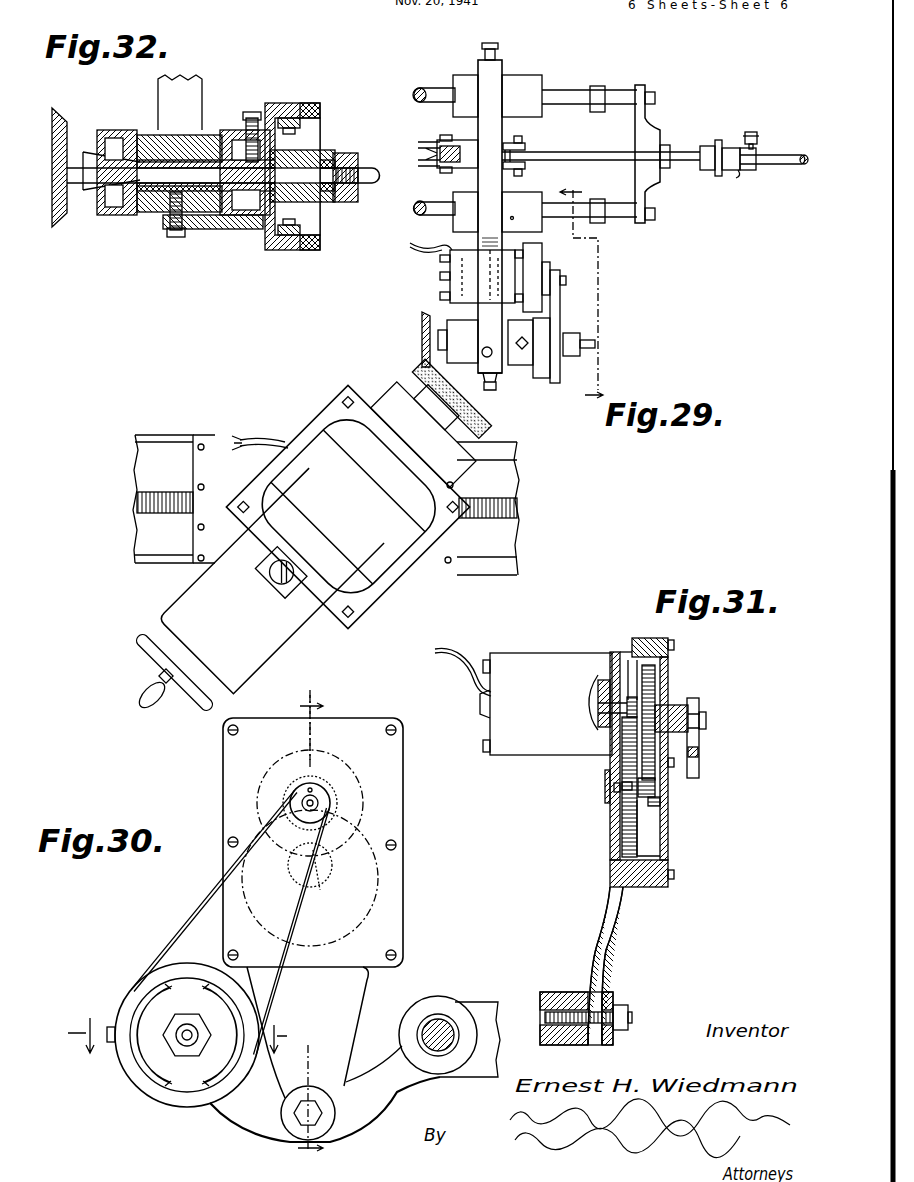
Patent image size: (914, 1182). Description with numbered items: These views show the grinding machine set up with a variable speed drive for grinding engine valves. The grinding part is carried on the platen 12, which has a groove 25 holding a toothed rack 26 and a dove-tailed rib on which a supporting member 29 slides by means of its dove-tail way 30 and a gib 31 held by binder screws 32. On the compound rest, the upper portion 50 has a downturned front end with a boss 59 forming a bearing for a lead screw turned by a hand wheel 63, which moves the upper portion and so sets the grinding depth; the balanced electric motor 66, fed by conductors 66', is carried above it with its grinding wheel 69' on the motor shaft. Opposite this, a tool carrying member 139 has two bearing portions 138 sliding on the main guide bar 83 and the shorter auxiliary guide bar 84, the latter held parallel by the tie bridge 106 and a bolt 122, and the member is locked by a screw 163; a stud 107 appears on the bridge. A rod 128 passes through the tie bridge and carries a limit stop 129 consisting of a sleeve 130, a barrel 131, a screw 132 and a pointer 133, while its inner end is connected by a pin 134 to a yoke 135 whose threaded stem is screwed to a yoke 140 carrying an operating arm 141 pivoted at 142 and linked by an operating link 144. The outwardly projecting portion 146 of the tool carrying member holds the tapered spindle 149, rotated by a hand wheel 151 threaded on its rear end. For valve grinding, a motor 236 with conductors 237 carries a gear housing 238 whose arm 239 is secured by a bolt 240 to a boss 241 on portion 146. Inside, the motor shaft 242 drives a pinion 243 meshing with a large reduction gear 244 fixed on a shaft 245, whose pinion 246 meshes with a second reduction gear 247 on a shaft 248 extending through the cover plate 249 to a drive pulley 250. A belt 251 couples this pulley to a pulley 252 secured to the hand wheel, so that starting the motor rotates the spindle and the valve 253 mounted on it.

In FIG. 29, the platen 12 is at (516, 469).
In FIG. 29, the groove 25 is at (512, 499).
In FIG. 29, the toothed rack 26 is at (517, 511).
In FIG. 29, the supporting member 29 is at (262, 440).
In FIG. 29, the dove-tail guide or way 30 is at (581, 294).
In FIG. 29, the gib 31 is at (310, 723).
In FIG. 30, the gib 31 is at (306, 936).
In FIG. 30, the binder screws 32 is at (173, 1035).
In FIG. 29, the upper portion of the compound rest 50 is at (182, 607).
In FIG. 29, the boss 59 is at (176, 646).
In FIG. 29, the hand wheel 63 is at (148, 653).
In FIG. 29, the electric motor 66 is at (347, 506).
In FIG. 29, the conductors 66' is at (247, 456).
In FIG. 29, the grinding wheel 69' is at (472, 401).
In FIG. 29, the main guide bar 83 is at (416, 207).
In FIG. 29, the auxiliary guide bar 84 is at (442, 90).
In FIG. 29, the tie bridge 106 is at (650, 122).
In FIG. 29, the stud 107 is at (652, 219).
In FIG. 29, the bolt 122 is at (650, 97).
In FIG. 29, the rod 128 is at (787, 152).
In FIG. 29, the limit stop 129 is at (729, 177).
In FIG. 29, the sleeve 130 is at (752, 162).
In FIG. 29, the barrel 131 is at (710, 167).
In FIG. 29, the screw 132 is at (750, 131).
In FIG. 29, the pointer 133 is at (743, 178).
In FIG. 29, the pin 134 is at (522, 140).
In FIG. 29, the yoke 135 is at (526, 150).
In FIG. 29, the bearing portions 138 is at (523, 78).
In FIG. 32, the tool carrying member 139 is at (201, 101).
In FIG. 30, the tool carrying member 139 is at (424, 1104).
In FIG. 29, the yoke 140 is at (470, 140).
In FIG. 29, the operating arm 141 is at (418, 151).
In FIG. 29, the pivot 142 is at (440, 136).
In FIG. 29, the operating link 144 is at (442, 172).
In FIG. 30, the outwardly projecting portion 146 is at (243, 1116).
In FIG. 31, the outwardly projecting portion 146 is at (562, 992).
In FIG. 32, the spindle 149 is at (146, 131).
In FIG. 32, the hand wheel 151 is at (276, 104).
In FIG. 29, the screw 163 is at (493, 44).
In FIG. 29, the motor 236 is at (450, 290).
In FIG. 31, the motor 236 is at (552, 664).
In FIG. 29, the conductors 237 is at (417, 237).
In FIG. 31, the conductors 237 is at (463, 663).
In FIG. 30, the gear housing 238 is at (412, 811).
In FIG. 31, the gear housing 238 is at (605, 823).
In FIG. 30, the arm 239 is at (354, 994).
In FIG. 31, the arm 239 is at (603, 958).
In FIG. 30, the bolt 240 is at (300, 1120).
In FIG. 31, the bolt 240 is at (630, 1018).
In FIG. 31, the boss 241 is at (590, 1045).
In FIG. 31, the motor shaft 242 is at (624, 655).
In FIG. 30, the pinion 243 is at (318, 778).
In FIG. 31, the pinion 243 is at (655, 686).
In FIG. 30, the reduction gear 244 is at (378, 836).
In FIG. 31, the reduction gear 244 is at (634, 831).
In FIG. 31, the shaft 245 is at (657, 789).
In FIG. 30, the pinion 246 is at (314, 883).
In FIG. 31, the pinion 246 is at (658, 808).
In FIG. 30, the reduction gear 247 is at (370, 790).
In FIG. 31, the reduction gear 247 is at (660, 708).
In FIG. 31, the shaft 248 is at (682, 720).
In FIG. 30, the cover plate 249 is at (395, 938).
In FIG. 31, the cover plate 249 is at (668, 851).
In FIG. 29, the drive pulley 250 is at (545, 272).
In FIG. 31, the drive pulley 250 is at (700, 748).
In FIG. 32, the belt 251 is at (305, 104).
In FIG. 29, the belt 251 is at (562, 298).
In FIG. 30, the belt 251 is at (172, 931).
In FIG. 31, the belt 251 is at (699, 771).
In FIG. 29, the pulley 252 is at (560, 372).
In FIG. 30, the pulley 252 is at (134, 998).
In FIG. 32, the valve 253 is at (62, 226).
In FIG. 29, the valve 253 is at (422, 344).